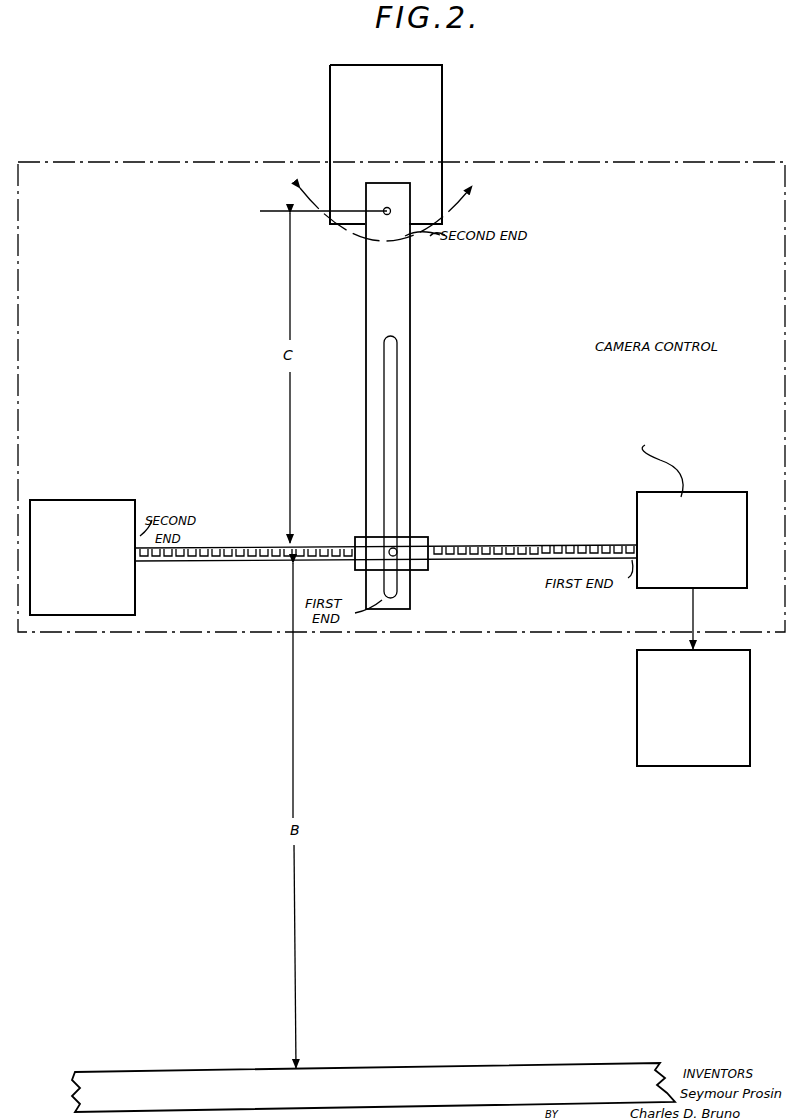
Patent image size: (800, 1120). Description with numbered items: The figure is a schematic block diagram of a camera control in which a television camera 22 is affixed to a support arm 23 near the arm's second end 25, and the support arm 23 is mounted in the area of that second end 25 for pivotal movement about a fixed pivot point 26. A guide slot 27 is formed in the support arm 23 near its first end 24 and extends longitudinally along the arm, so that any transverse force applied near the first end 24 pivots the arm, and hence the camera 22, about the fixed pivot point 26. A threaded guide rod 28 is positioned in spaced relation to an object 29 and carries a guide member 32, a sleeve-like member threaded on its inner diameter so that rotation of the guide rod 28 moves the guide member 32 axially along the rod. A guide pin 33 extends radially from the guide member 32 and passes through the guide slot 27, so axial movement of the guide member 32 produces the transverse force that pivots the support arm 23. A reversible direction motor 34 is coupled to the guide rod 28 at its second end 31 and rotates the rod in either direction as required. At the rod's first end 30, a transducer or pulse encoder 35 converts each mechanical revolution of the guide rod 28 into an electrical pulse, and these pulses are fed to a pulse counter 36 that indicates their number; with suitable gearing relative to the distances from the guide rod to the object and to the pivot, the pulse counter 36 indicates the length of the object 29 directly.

The television camera 22 is at (432, 82).
The support arm 23 is at (395, 305).
The first end 24 is at (410, 609).
The second end 25 is at (395, 192).
The fixed pivot point 26 is at (390, 209).
The guide slot 27 is at (390, 418).
The guide rod 28 is at (538, 545).
The object 29 is at (140, 1072).
The first end of guide rod 30 is at (636, 545).
The second end 31 is at (136, 560).
The guide member 32 is at (422, 570).
The guide pin 33 is at (397, 549).
The reversible direction motor 34 is at (50, 502).
The pulse encoder 35 is at (715, 493).
The pulse counter 36 is at (695, 767).